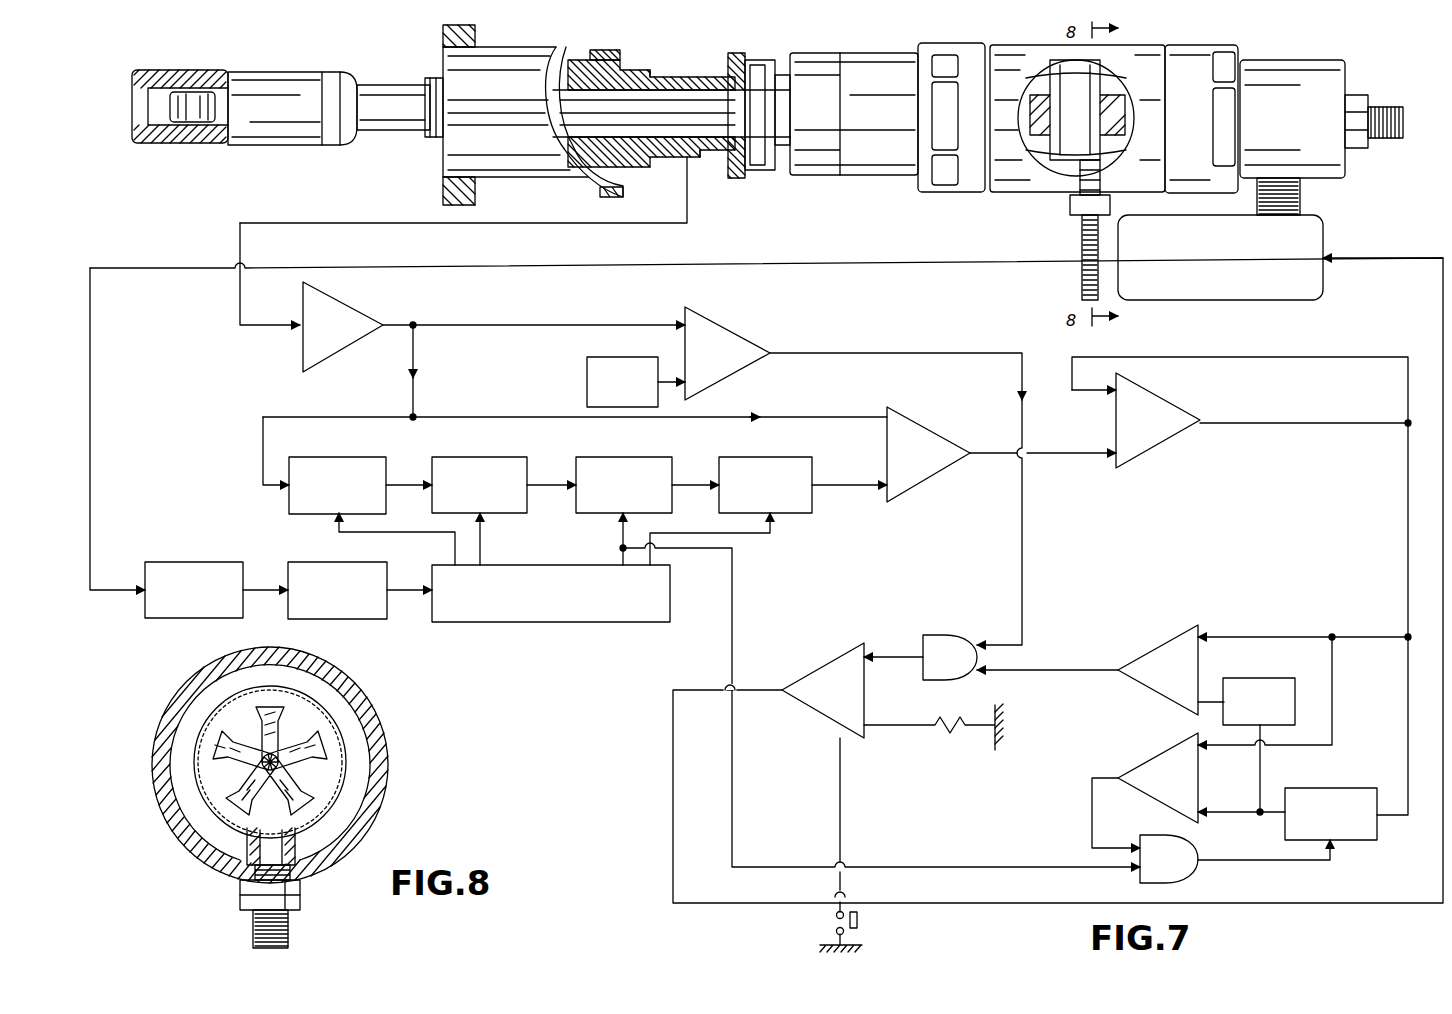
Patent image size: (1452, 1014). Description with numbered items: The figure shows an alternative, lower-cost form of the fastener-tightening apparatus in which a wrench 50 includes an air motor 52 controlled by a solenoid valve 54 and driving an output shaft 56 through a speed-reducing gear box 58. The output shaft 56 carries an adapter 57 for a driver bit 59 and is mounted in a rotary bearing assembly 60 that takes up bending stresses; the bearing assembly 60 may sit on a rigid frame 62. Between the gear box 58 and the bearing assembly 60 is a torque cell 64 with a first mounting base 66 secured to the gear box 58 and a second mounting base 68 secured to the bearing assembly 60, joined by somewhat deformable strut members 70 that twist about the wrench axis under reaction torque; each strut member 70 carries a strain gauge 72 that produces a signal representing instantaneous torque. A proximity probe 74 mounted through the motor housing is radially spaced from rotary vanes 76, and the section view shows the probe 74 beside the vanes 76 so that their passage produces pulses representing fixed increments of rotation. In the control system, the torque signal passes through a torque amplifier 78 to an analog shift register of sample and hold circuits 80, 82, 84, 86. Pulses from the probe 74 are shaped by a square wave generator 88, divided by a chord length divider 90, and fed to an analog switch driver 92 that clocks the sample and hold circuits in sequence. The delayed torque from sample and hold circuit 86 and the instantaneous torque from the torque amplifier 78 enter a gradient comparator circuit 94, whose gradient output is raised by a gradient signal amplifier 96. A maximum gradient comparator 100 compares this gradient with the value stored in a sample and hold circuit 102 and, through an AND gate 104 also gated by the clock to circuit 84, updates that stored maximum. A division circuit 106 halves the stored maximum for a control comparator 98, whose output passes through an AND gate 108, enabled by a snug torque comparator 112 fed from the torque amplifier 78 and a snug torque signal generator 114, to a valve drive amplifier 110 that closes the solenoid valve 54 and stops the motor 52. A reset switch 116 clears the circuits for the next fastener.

In FIG. 7, the wrench 50 is at (1360, 78).
In FIG. 7, the air motor 52 is at (1013, 177).
In FIG. 8, the air motor 52 is at (207, 690).
In FIG. 7, the solenoid valve 54 is at (1310, 228).
In FIG. 7, the output shaft 56 is at (383, 93).
In FIG. 7, the adapter 57 is at (268, 80).
In FIG. 7, the speed-reducing gear box 58 is at (863, 173).
In FIG. 7, the driver bit 59 is at (203, 47).
In FIG. 7, the rotary bearing assembly 60 is at (513, 162).
In FIG. 7, the rigid frame 62 is at (450, 192).
In FIG. 7, the torque cell 64 is at (635, 60).
In FIG. 7, the first mounting base 66 is at (745, 52).
In FIG. 7, the second mounting base 68 is at (612, 57).
In FIG. 7, the strut member 70 is at (693, 72).
In FIG. 7, the strain gauge 72 is at (682, 157).
In FIG. 7, the proximity probe 74 is at (1082, 258).
In FIG. 8, the proximity probe 74 is at (287, 920).
In FIG. 7, the rotary vanes 76 is at (1117, 100).
In FIG. 8, the rotary vanes 76 is at (277, 717).
In FIG. 7, the torque amplifier 78 is at (337, 302).
In FIG. 7, the sample and hold circuit 80 is at (347, 457).
In FIG. 7, the sample and hold circuit 82 is at (497, 457).
In FIG. 7, the sample and hold circuit 84 is at (633, 457).
In FIG. 7, the sample and hold circuit 86 is at (780, 457).
In FIG. 7, the square wave generator 88 is at (170, 562).
In FIG. 7, the chord length divider 90 is at (320, 562).
In FIG. 7, the analog switch driver 92 is at (540, 622).
In FIG. 7, the gradient comparator circuit 94 is at (920, 417).
In FIG. 7, the gradient signal amplifier 96 is at (1153, 395).
In FIG. 7, the control comparator 98 is at (1177, 633).
In FIG. 7, the maximum gradient comparator 100 is at (1157, 750).
In FIG. 7, the sample and hold circuit 102 is at (1323, 783).
In FIG. 7, the AND gate 104 is at (1180, 877).
In FIG. 7, the division circuit 106 is at (1260, 677).
In FIG. 7, the AND gate 108 is at (933, 635).
In FIG. 7, the valve drive amplifier 110 is at (840, 657).
In FIG. 7, the snug torque comparator 112 is at (730, 327).
In FIG. 7, the snug torque signal generator 114 is at (585, 366).
In FIG. 7, the reset switch 116 is at (860, 920).